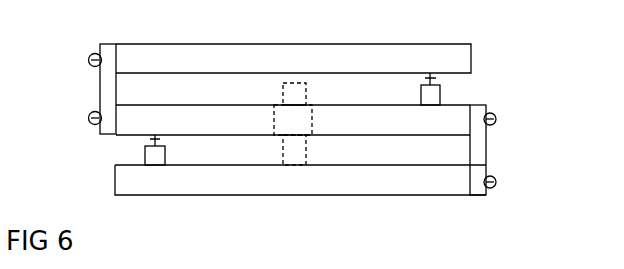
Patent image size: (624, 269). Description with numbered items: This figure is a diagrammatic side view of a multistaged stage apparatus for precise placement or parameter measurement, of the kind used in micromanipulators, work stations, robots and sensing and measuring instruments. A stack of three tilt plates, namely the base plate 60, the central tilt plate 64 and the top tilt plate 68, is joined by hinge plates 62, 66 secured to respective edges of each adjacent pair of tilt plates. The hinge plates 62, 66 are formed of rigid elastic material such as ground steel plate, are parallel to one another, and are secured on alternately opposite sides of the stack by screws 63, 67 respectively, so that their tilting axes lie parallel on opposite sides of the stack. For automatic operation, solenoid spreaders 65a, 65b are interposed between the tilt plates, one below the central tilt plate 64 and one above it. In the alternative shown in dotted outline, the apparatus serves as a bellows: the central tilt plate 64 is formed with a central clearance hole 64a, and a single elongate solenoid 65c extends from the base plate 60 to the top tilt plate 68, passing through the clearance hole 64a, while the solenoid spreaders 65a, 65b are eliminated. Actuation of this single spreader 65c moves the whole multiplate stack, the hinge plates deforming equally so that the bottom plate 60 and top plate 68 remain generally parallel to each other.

The tilt plate 60 is at (310, 191).
The hinge plate 62 is at (487, 147).
The screws 63 is at (494, 112).
The tilt plate 64 is at (307, 131).
The central clearance hole 64a is at (312, 118).
The solenoid spreader 65a is at (145, 151).
The solenoid spreader 65b is at (440, 95).
The elongate solenoid 65c is at (283, 90).
The hinge plate 66 is at (100, 83).
The screws 67 is at (93, 53).
The tilt plate 68 is at (303, 67).